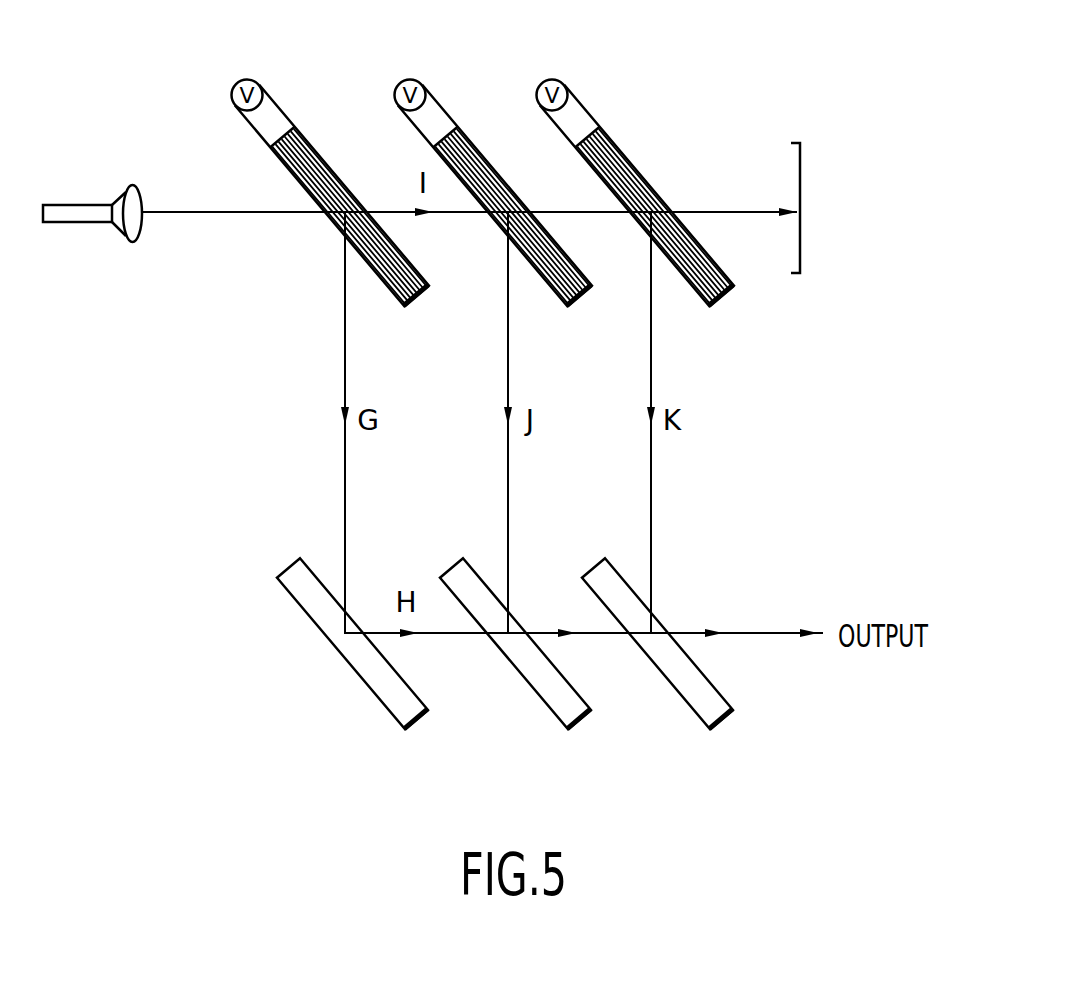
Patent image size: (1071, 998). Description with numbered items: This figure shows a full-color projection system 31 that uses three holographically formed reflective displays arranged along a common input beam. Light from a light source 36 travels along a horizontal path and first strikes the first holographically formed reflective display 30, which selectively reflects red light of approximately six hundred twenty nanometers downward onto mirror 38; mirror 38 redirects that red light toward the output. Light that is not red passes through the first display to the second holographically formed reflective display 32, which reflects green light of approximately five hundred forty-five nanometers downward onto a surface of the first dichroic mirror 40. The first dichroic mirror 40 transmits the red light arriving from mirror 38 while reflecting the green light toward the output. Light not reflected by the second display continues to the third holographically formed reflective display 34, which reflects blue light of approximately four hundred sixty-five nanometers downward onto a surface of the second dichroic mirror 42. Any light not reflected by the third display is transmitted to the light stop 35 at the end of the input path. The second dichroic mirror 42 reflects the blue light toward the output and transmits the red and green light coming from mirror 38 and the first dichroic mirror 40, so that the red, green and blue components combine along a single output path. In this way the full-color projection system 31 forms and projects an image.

The first holographically formed reflective display 30 is at (309, 140).
The full-color projection system 31 is at (714, 101).
The second holographically formed reflective display 32 is at (471, 140).
The third holographically formed reflective display 34 is at (611, 138).
The light stop 35 is at (800, 178).
The light source 36 is at (83, 205).
The mirror 38 is at (373, 697).
The first dichroic mirror 40 is at (538, 697).
The second dichroic mirror 42 is at (693, 710).